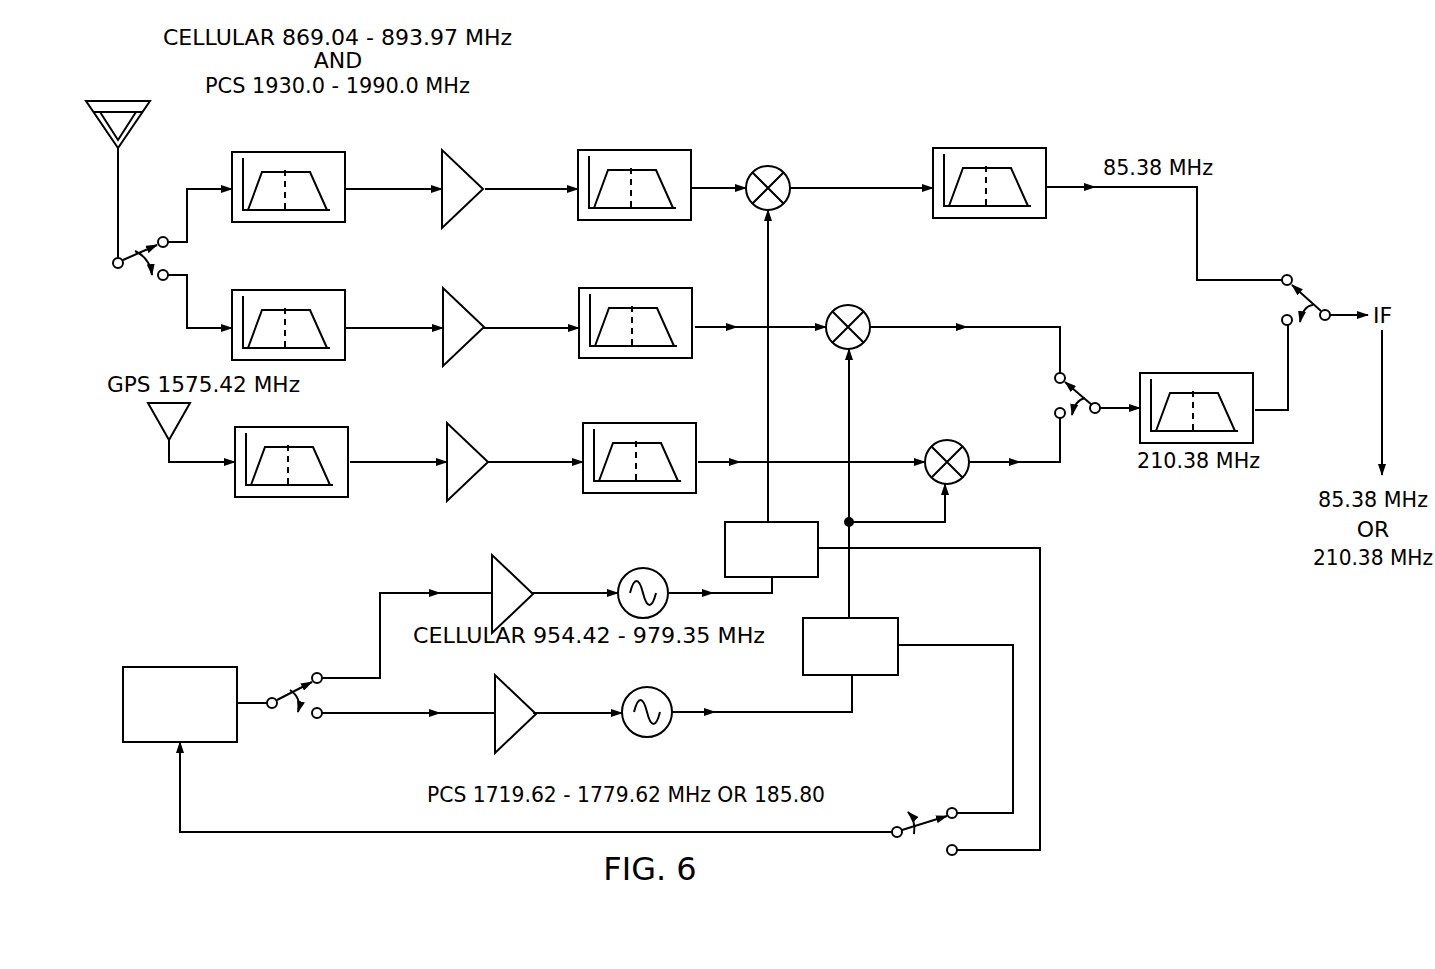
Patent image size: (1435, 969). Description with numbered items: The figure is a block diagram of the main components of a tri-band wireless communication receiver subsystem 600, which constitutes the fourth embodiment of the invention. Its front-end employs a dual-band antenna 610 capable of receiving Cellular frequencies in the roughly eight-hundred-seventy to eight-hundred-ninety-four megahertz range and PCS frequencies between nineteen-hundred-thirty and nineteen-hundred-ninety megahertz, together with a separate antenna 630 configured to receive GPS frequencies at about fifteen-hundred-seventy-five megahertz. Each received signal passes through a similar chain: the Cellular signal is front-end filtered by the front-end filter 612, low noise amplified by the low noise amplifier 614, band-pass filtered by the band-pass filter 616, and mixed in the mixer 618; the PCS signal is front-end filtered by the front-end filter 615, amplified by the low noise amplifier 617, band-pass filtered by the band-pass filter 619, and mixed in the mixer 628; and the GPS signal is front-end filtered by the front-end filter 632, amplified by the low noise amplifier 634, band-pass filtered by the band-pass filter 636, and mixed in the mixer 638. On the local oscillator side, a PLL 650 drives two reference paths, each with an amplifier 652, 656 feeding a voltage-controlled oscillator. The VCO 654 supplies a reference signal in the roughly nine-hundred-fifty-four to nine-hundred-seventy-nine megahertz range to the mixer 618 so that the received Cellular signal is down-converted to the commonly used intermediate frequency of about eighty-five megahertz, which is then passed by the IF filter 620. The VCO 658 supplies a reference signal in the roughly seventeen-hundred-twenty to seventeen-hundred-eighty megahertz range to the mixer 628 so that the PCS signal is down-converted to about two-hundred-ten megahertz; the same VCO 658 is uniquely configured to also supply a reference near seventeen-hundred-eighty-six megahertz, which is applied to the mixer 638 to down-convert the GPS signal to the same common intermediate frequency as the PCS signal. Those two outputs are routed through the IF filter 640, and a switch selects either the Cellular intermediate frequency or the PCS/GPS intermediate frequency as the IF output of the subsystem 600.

The receiver subsystem 600 is at (1236, 800).
The dual-band antenna 610 is at (140, 128).
The front-end filter 612 is at (295, 152).
The low noise amplifier 614 is at (460, 168).
The front-end filter 615 is at (297, 290).
The band-pass filter 616 is at (650, 150).
The low noise amplifier 617 is at (462, 305).
The mixer 618 is at (775, 168).
The band-pass filter 619 is at (650, 288).
The IF filter 620 is at (1015, 148).
The mixer 628 is at (852, 306).
The antenna 630 is at (158, 420).
The front-end filter 632 is at (300, 427).
The low noise amplifier 634 is at (465, 440).
The band-pass filter 636 is at (652, 423).
The mixer 638 is at (950, 440).
The IF filter 640 is at (1208, 373).
The PLL 650 is at (190, 667).
The amplifier 652 is at (510, 565).
The VCO 654 is at (645, 568).
The amplifier 656 is at (510, 740).
The VCO 658 is at (647, 737).